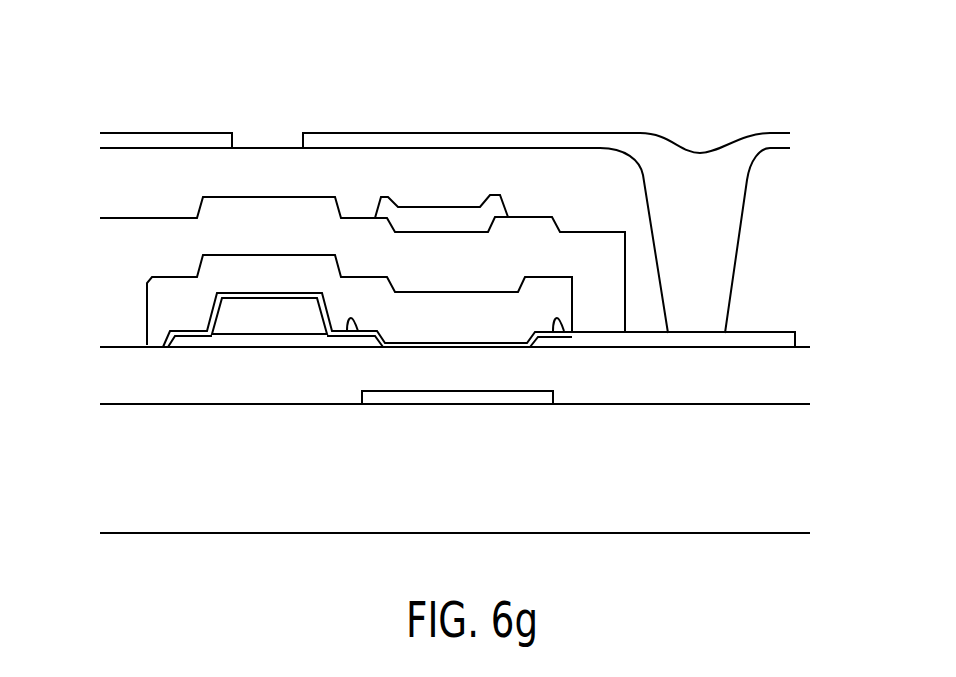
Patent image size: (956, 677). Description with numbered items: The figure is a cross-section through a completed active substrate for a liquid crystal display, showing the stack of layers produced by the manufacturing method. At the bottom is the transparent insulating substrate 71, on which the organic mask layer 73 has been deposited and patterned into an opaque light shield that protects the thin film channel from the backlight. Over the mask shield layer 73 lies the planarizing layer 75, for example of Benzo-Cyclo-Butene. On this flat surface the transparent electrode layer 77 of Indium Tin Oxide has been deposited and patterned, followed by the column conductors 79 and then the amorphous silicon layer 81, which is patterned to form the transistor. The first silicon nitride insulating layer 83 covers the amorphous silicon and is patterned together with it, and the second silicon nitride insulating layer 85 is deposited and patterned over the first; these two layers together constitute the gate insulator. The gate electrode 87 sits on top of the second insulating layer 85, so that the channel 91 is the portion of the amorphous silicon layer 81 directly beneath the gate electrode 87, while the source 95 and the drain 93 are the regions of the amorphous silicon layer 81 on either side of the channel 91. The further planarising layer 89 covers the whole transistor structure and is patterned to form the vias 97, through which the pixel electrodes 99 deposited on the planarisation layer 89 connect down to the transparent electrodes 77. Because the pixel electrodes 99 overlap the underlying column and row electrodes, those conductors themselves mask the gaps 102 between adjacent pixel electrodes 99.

The gaps between the pixel electrodes 102 is at (260, 100).
The transparent insulating substrate 71 is at (622, 510).
The organic mask layer 73 is at (478, 398).
The planarizing layer 75 is at (778, 375).
The transparent electrode layer 77 is at (773, 333).
The column conductors 79 is at (268, 323).
The amorphous silicon layer 81 is at (143, 346).
The first silicon nitride insulating layer 83 is at (147, 283).
The second silicon nitride insulating layer 85 is at (113, 246).
The gate electrode 87 is at (443, 207).
The further planarising layer 89 is at (115, 183).
The channel 91 is at (425, 343).
The drain 93 is at (564, 320).
The source 95 is at (348, 320).
The vias 97 is at (700, 177).
The pixel electrodes 99 is at (577, 132).